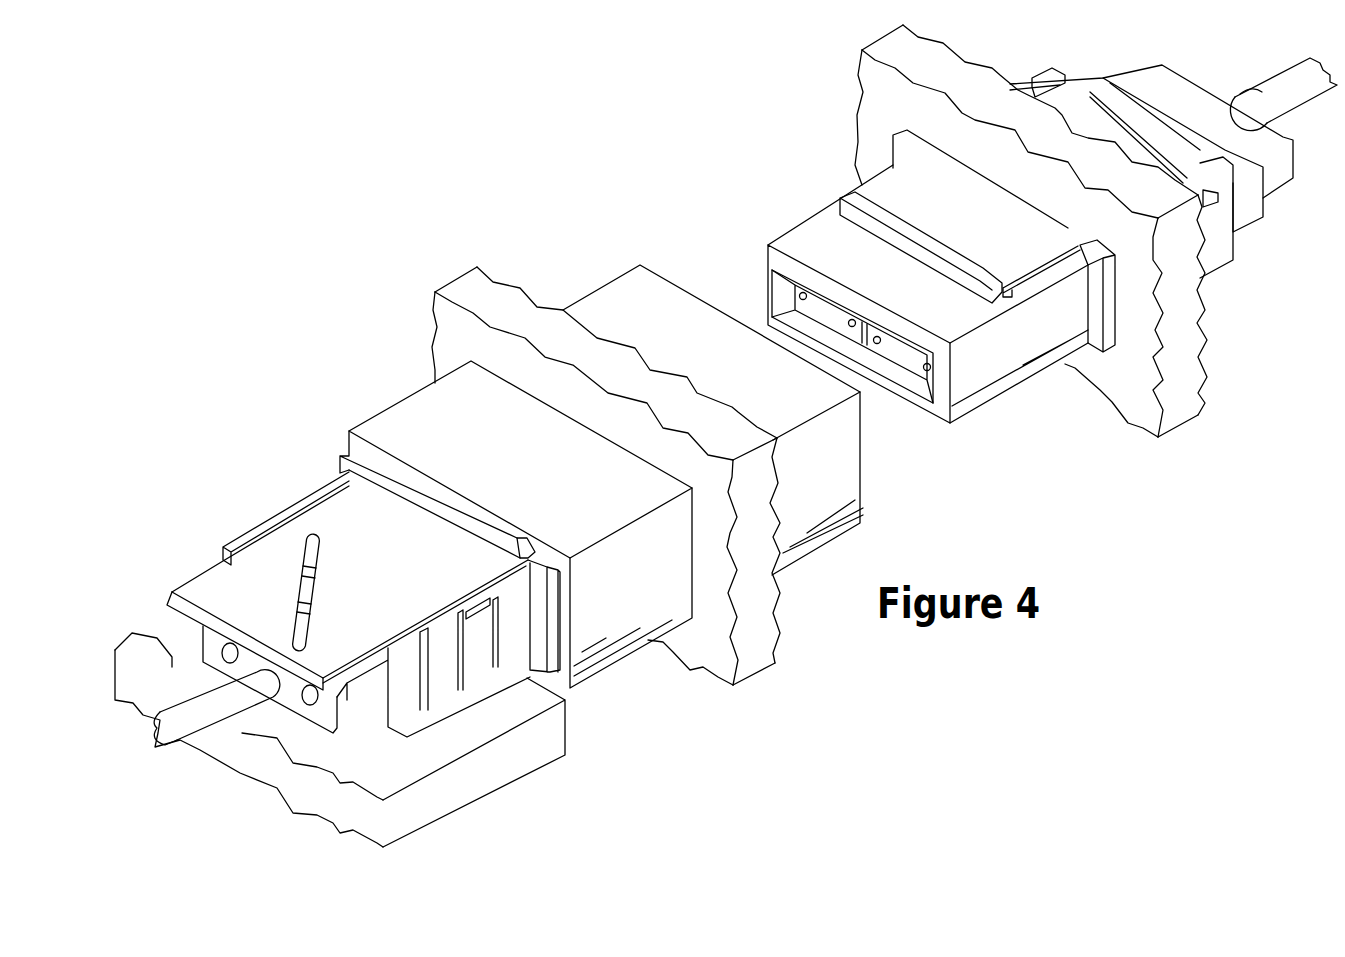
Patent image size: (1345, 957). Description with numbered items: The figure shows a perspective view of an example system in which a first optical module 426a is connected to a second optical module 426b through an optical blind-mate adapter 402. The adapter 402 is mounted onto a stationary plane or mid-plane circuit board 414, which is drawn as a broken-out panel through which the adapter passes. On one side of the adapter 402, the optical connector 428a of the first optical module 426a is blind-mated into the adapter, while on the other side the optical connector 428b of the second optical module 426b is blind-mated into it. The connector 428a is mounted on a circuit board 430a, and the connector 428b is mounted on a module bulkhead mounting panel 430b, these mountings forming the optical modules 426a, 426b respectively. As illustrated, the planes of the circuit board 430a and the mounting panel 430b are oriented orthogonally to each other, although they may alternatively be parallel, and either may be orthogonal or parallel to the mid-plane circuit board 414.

The optical blind-mate adapter 402 is at (415, 392).
The mid-plane circuit board 414 is at (447, 285).
The first optical module 426a is at (312, 432).
The second optical module 426b is at (843, 140).
The optical connector 428a is at (257, 522).
The optical connector 428b is at (1025, 383).
The circuit board 430a is at (504, 789).
The module bulkhead mounting panel 430b is at (1184, 432).